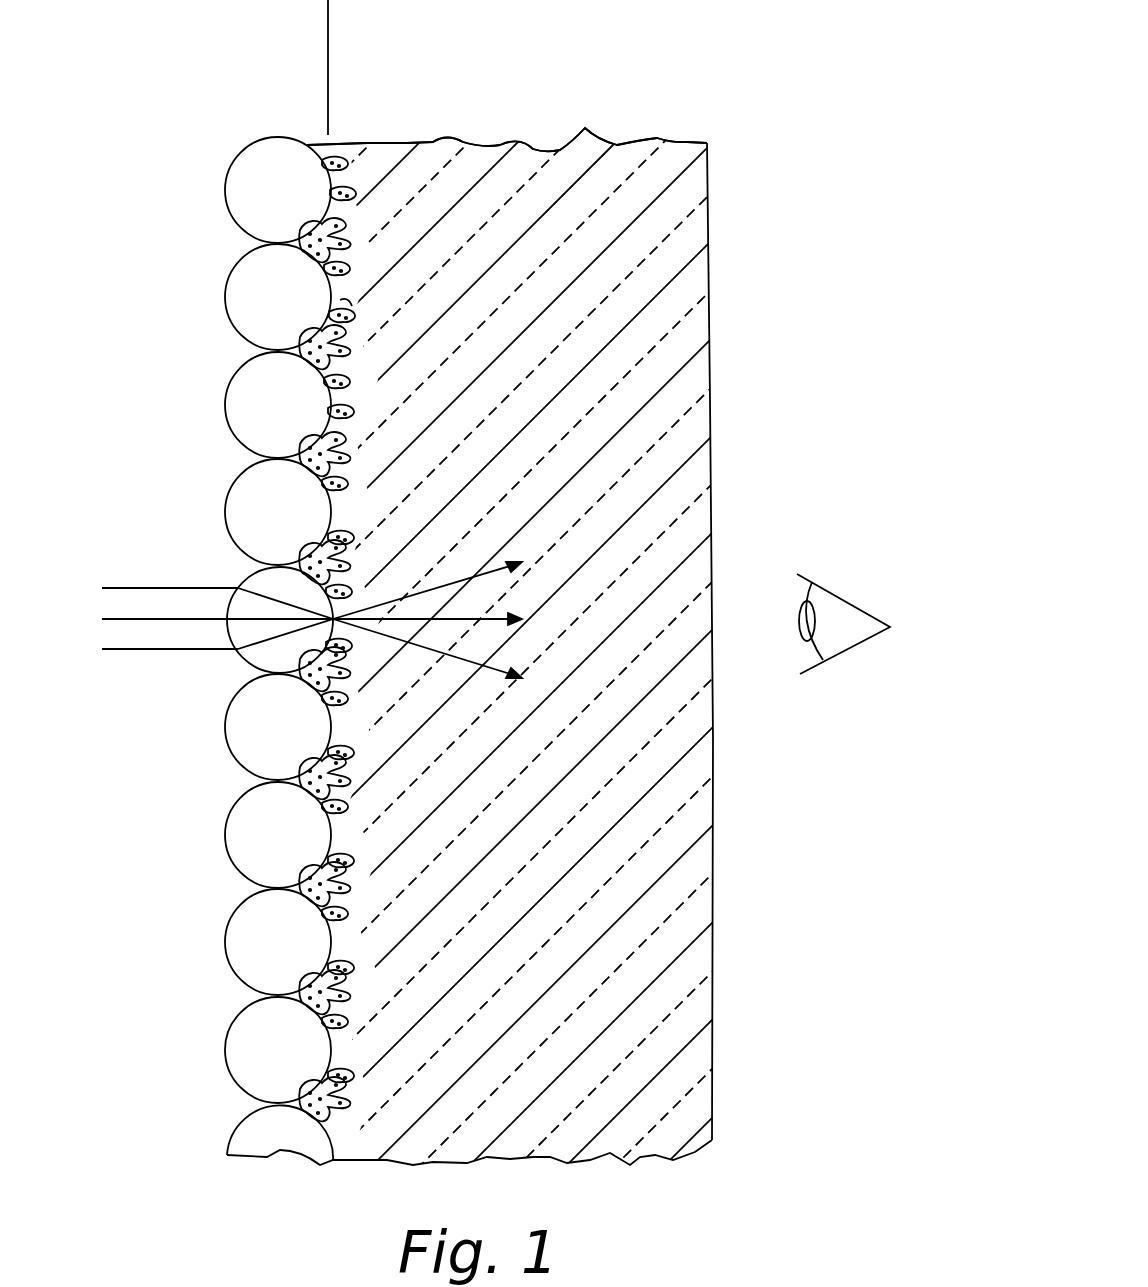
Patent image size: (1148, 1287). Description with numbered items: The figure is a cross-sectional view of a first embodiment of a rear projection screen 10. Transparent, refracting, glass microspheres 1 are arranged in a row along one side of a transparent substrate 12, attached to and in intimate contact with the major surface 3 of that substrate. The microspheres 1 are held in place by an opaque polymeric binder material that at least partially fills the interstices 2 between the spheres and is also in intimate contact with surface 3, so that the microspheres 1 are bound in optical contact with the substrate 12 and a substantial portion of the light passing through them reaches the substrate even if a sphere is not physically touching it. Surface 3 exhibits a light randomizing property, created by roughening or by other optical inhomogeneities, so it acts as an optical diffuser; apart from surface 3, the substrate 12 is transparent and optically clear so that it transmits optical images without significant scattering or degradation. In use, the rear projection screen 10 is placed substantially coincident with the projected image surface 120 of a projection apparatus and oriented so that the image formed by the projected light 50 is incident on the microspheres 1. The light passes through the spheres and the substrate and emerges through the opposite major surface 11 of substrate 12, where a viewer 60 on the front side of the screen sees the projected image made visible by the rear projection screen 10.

The glass microspheres 1 is at (267, 204).
The interstices 2 is at (354, 639).
The major surface 3 is at (345, 312).
The rear projection screen 10 is at (537, 108).
The major surface 11 is at (711, 237).
The transparent substrate 12 is at (672, 137).
The projected light 50 is at (147, 587).
The viewer 60 is at (850, 648).
The projected image surface 120 is at (326, 66).